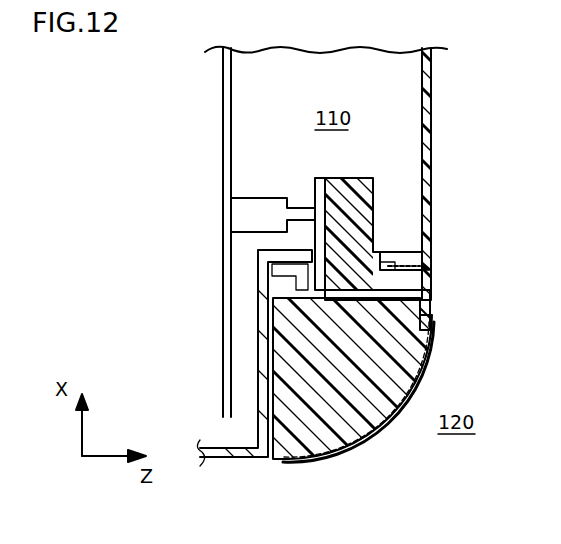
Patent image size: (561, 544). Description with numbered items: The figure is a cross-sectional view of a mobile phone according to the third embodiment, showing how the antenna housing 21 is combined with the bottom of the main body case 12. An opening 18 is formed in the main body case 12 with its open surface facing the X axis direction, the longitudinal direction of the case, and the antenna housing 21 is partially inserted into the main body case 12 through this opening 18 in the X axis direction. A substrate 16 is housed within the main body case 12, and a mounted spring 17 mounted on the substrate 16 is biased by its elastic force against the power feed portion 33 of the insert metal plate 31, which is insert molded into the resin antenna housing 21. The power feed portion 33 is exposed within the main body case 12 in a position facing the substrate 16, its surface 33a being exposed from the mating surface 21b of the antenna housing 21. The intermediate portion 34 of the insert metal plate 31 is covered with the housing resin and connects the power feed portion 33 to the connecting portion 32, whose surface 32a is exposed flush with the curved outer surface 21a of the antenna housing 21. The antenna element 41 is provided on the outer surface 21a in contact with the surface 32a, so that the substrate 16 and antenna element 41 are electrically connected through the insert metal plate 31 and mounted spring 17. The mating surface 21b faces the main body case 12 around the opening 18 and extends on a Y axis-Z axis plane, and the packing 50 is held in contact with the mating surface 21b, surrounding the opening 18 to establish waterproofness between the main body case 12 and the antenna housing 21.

The main body case 12 is at (431, 108).
The substrate 16 is at (223, 113).
The mounted spring 17 is at (231, 197).
The opening 18 is at (300, 275).
The antenna housing 21 is at (298, 428).
The outer surface 21a is at (385, 425).
The mating surface 21b is at (395, 258).
The insert metal plate 31 is at (349, 312).
The connecting portion 32 is at (430, 306).
The surface 32a is at (428, 297).
The power feed portion 33 is at (320, 236).
The surface 33a is at (315, 195).
The intermediate portion 34 is at (358, 305).
The antenna element 41 is at (434, 338).
The packing 50 is at (405, 268).